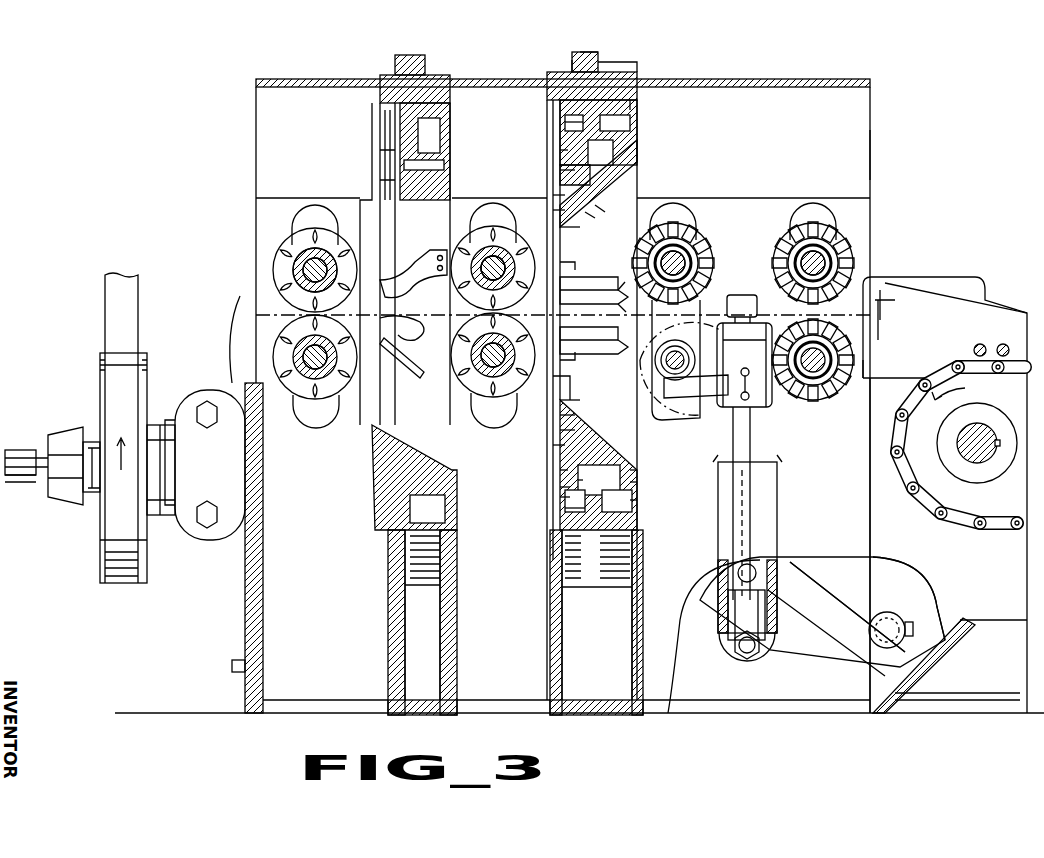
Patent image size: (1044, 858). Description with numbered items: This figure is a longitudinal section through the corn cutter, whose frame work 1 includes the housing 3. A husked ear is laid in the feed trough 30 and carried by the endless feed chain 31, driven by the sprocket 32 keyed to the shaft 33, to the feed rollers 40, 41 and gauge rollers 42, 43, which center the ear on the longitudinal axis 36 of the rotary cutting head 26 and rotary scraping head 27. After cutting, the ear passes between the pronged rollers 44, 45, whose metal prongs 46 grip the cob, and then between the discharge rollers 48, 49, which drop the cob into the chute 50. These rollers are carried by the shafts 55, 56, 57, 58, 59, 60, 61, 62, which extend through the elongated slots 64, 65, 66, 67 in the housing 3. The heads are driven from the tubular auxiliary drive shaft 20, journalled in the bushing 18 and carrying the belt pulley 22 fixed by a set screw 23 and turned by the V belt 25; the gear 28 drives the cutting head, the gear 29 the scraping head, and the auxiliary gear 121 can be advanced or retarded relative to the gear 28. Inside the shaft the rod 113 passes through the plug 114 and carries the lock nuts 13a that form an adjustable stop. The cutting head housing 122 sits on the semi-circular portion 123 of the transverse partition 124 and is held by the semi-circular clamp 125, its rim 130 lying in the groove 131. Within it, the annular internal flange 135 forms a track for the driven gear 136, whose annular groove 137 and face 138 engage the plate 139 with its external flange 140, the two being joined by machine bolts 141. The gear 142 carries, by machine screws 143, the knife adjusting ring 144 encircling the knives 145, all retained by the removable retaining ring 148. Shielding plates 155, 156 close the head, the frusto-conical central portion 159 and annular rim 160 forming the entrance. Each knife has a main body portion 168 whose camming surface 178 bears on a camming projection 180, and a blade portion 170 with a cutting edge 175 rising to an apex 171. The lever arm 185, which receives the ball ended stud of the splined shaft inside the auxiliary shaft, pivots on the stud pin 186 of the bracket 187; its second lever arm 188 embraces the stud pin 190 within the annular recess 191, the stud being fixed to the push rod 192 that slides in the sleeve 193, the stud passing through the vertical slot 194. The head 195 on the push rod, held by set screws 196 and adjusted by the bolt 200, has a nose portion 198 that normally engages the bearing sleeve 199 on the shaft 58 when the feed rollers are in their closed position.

The frame work 1 is at (870, 207).
The housing 3 is at (870, 157).
The lock nuts 13a is at (36, 485).
The bushing 18 is at (176, 453).
The auxiliary drive shaft 20 is at (95, 490).
The belt pulley 22 is at (150, 585).
The set screw 23 is at (160, 418).
The V belt 25 is at (105, 281).
The rotary cutting head 26 is at (540, 114).
The rotary scraping head 27 is at (380, 108).
The gear 28 is at (630, 572).
The gear 29 is at (410, 570).
The feed trough 30 is at (985, 313).
The endless feed chain 31 is at (970, 355).
The power driven sprocket 32 is at (995, 516).
The shaft 33 is at (966, 447).
The longitudinal axis 36 is at (885, 313).
The feed roller 40 is at (858, 256).
The feed roller 41 is at (868, 356).
The gauge roller 42 is at (690, 246).
The gauge roller 43 is at (680, 410).
The pronged roller 44 is at (489, 240).
The pronged roller 45 is at (493, 364).
The metal prongs 46 is at (445, 252).
The discharge roller 48 is at (300, 246).
The discharge roller 49 is at (298, 385).
The chute 50 is at (240, 297).
The shaft 55 is at (798, 242).
The shaft 56 is at (822, 400).
The shaft 57 is at (700, 258).
The shaft 58 is at (675, 340).
The shaft 59 is at (500, 262).
The shaft 60 is at (513, 392).
The shaft 61 is at (305, 268).
The shaft 62 is at (298, 339).
The elongated slot 64 is at (815, 208).
The elongated slot 65 is at (680, 208).
The elongated slot 66 is at (553, 178).
The elongated slot 67 is at (318, 212).
The rod 113 is at (37, 450).
The plug 114 is at (90, 442).
The auxiliary gear 121 is at (566, 570).
The cutting head housing 122 is at (632, 110).
The semi-circular portion 123 is at (553, 526).
The transverse partition 124 is at (640, 620).
The semi-circular clamp 125 is at (615, 72).
The rim 130 is at (575, 72).
The groove 131 is at (592, 54).
The annular internal flange 135 is at (593, 479).
The driven gear 136 is at (637, 470).
The annular groove 137 is at (637, 482).
The face 138 is at (590, 216).
The plate 139 is at (565, 170).
The external flange 140 is at (560, 487).
The machine bolts 141 is at (600, 210).
The gear 142 is at (562, 497).
The machine screws 143 is at (562, 150).
The knife adjusting ring 144 is at (558, 196).
The knives 145 is at (600, 309).
The removable retaining ring 148 is at (562, 415).
The shielding plate 155 is at (637, 500).
The shielding plate 156 is at (562, 122).
The frusto-conical central portion 159 is at (580, 360).
The annular rim 160 is at (576, 380).
The main body portion 168 is at (585, 232).
The blade portion 170 is at (590, 284).
The apex 171 is at (612, 293).
The cutting edge 175 is at (604, 290).
The camming surface 178 is at (560, 430).
The camming projection 180 is at (565, 210).
The lever arm 185 is at (905, 590).
The stud pin 186 is at (880, 640).
The bracket 187 is at (838, 558).
The second lever arm 188 is at (830, 622).
The stud pin 190 is at (738, 566).
The annular recess 191 is at (766, 412).
The push rod 192 is at (735, 585).
The sleeve 193 is at (778, 495).
The vertical slot 194 is at (766, 618).
The head 195 is at (775, 323).
The headless set screws 196 is at (745, 368).
The nose portion 198 is at (696, 386).
The bearing sleeve 199 is at (720, 340).
The bolt 200 is at (742, 295).